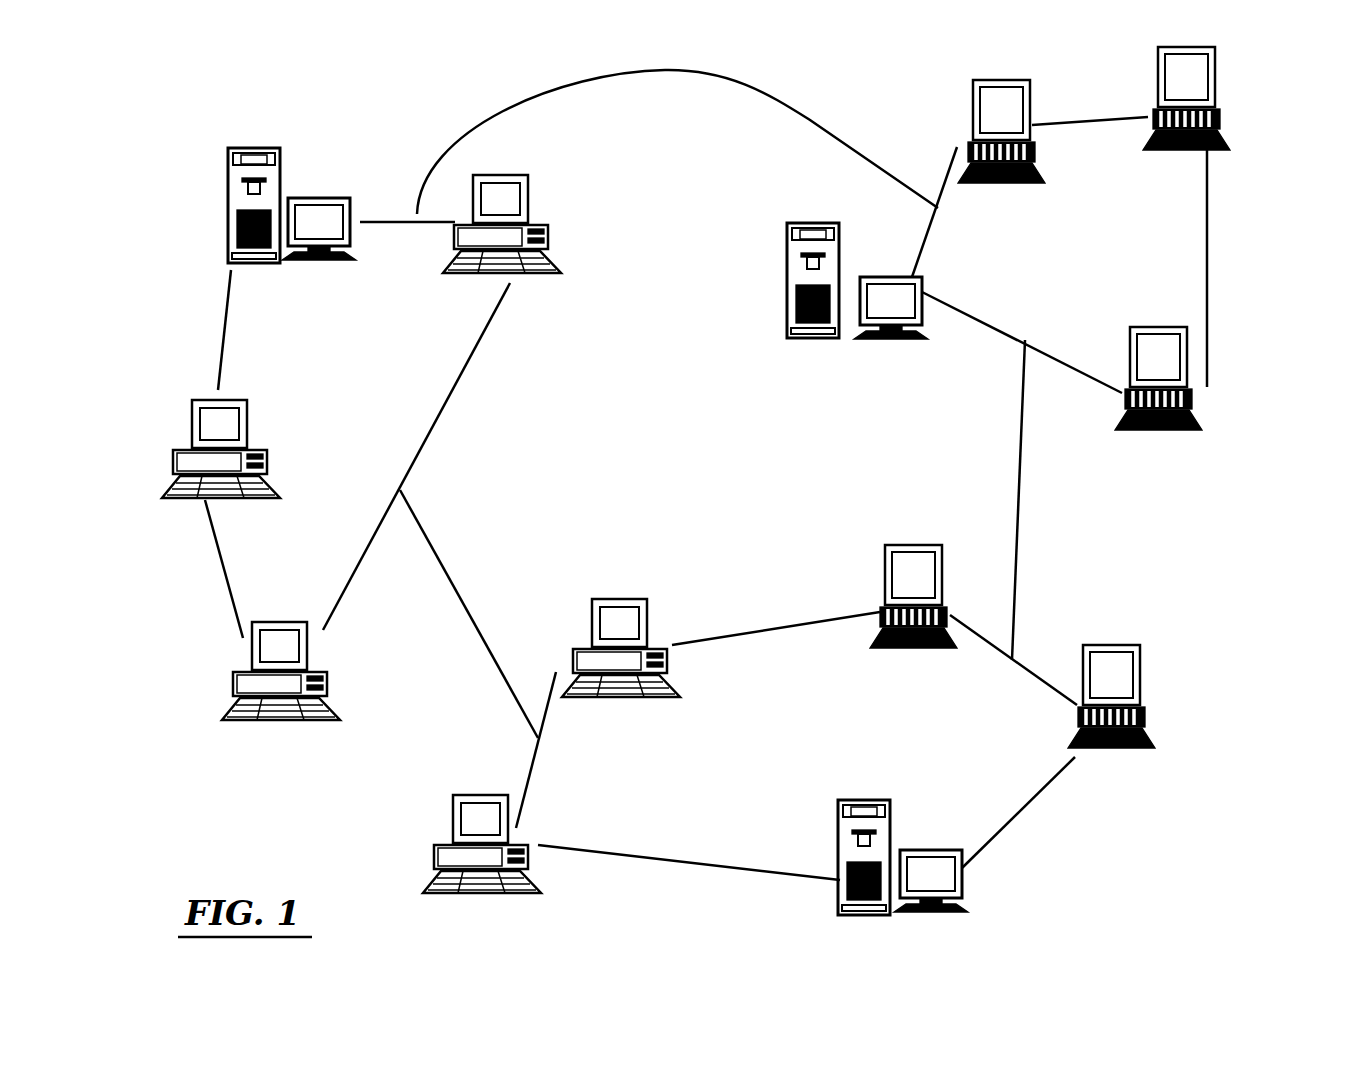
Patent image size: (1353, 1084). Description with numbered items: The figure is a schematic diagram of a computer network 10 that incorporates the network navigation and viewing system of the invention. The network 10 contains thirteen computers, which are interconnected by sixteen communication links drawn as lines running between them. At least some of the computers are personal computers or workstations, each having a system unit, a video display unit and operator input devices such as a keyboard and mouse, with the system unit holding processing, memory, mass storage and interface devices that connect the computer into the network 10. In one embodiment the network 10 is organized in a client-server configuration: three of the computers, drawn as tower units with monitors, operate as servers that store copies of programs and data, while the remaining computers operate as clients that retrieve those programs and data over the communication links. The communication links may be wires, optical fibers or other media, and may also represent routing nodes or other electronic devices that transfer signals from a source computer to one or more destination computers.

The computer network 10 is at (253, 795).